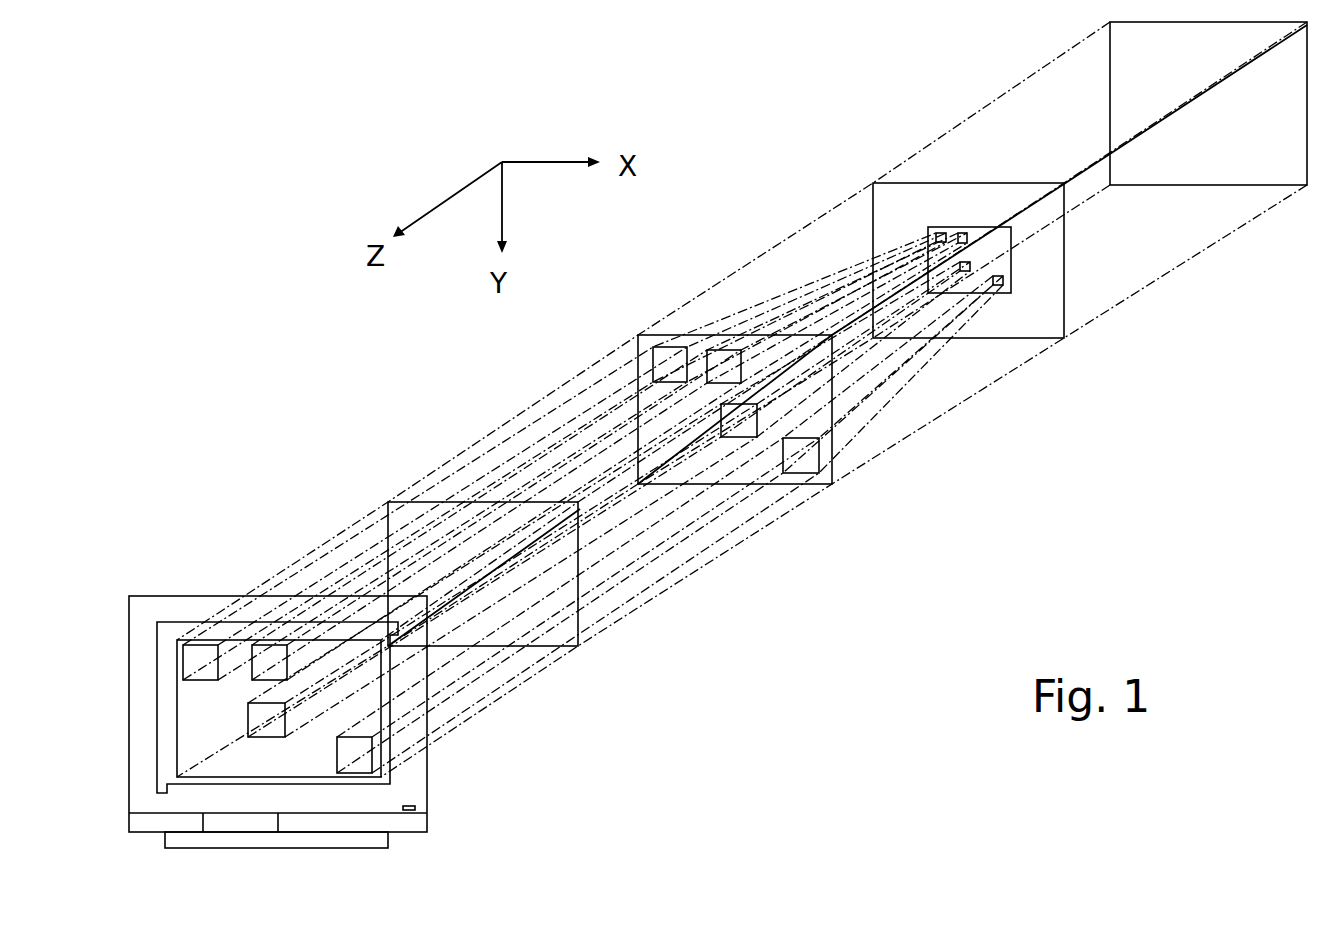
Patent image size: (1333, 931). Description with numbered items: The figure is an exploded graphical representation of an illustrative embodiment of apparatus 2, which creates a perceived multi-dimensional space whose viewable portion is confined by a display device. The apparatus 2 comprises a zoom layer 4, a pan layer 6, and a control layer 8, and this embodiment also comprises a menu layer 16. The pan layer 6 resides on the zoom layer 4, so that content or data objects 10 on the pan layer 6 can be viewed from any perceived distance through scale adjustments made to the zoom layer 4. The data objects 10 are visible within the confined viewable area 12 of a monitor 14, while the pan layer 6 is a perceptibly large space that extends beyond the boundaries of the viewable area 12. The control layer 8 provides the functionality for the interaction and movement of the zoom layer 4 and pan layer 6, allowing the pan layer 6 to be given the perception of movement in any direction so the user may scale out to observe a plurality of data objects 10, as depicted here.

The apparatus 2 is at (430, 382).
The zoom layer 4 is at (1067, 273).
The pan layer 6 is at (833, 410).
The control layer 8 is at (1308, 186).
The data objects 10 is at (208, 655).
The viewable area 12 is at (174, 620).
The monitor 14 is at (428, 757).
The menu layer 16 is at (579, 566).